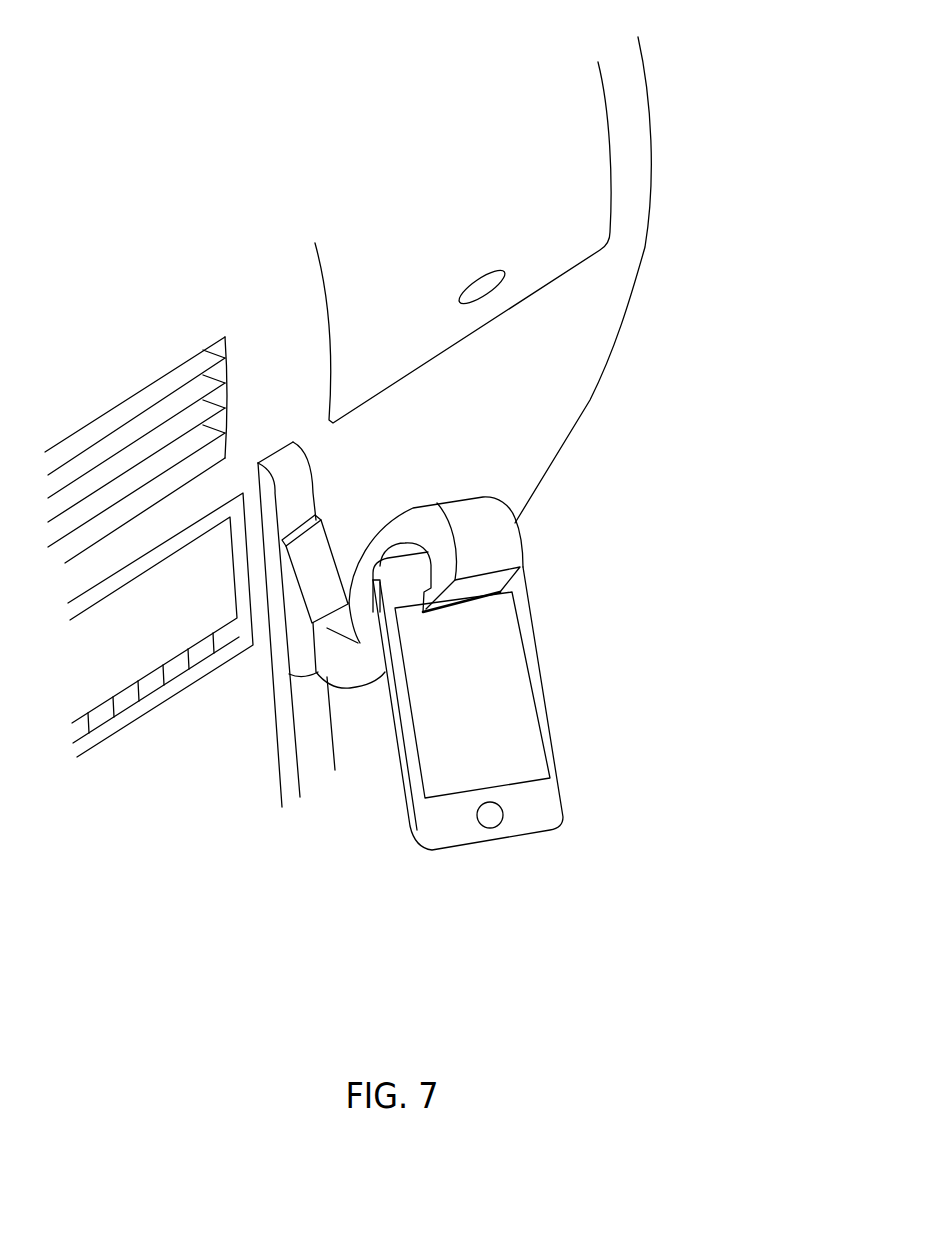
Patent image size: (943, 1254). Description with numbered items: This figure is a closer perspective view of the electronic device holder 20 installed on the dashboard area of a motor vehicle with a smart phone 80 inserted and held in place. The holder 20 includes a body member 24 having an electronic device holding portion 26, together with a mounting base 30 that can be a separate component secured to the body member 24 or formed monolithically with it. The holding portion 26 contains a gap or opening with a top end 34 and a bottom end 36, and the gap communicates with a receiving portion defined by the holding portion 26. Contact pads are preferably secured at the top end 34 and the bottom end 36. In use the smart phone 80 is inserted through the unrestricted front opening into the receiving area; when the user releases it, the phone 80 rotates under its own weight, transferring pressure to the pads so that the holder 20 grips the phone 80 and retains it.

The holder 20 is at (511, 577).
The body member 24 is at (365, 562).
The electronic device holding portion 26 is at (413, 523).
The mounting base 30 is at (295, 650).
The top end 34 is at (502, 580).
The bottom end 36 is at (385, 667).
The smart phone 80 is at (496, 713).